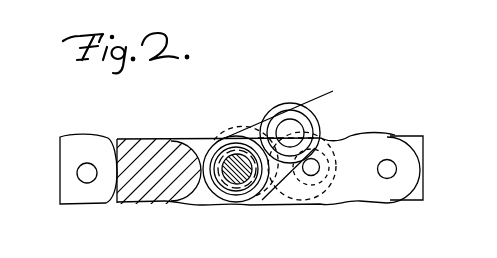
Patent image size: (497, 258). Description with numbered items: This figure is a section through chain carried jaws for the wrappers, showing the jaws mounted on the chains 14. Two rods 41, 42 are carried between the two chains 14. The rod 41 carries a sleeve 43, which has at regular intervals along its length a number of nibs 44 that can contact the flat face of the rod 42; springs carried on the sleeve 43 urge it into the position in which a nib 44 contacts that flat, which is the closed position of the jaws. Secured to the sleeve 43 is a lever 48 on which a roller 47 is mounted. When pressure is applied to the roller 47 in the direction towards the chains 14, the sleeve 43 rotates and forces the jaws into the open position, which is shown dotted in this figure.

The chains 14 is at (68, 149).
The rod 42 is at (146, 150).
The sleeve 43 is at (208, 189).
The rod 41 is at (238, 184).
The nibs 44 is at (220, 134).
The roller 47 is at (290, 135).
The lever 48 is at (247, 130).